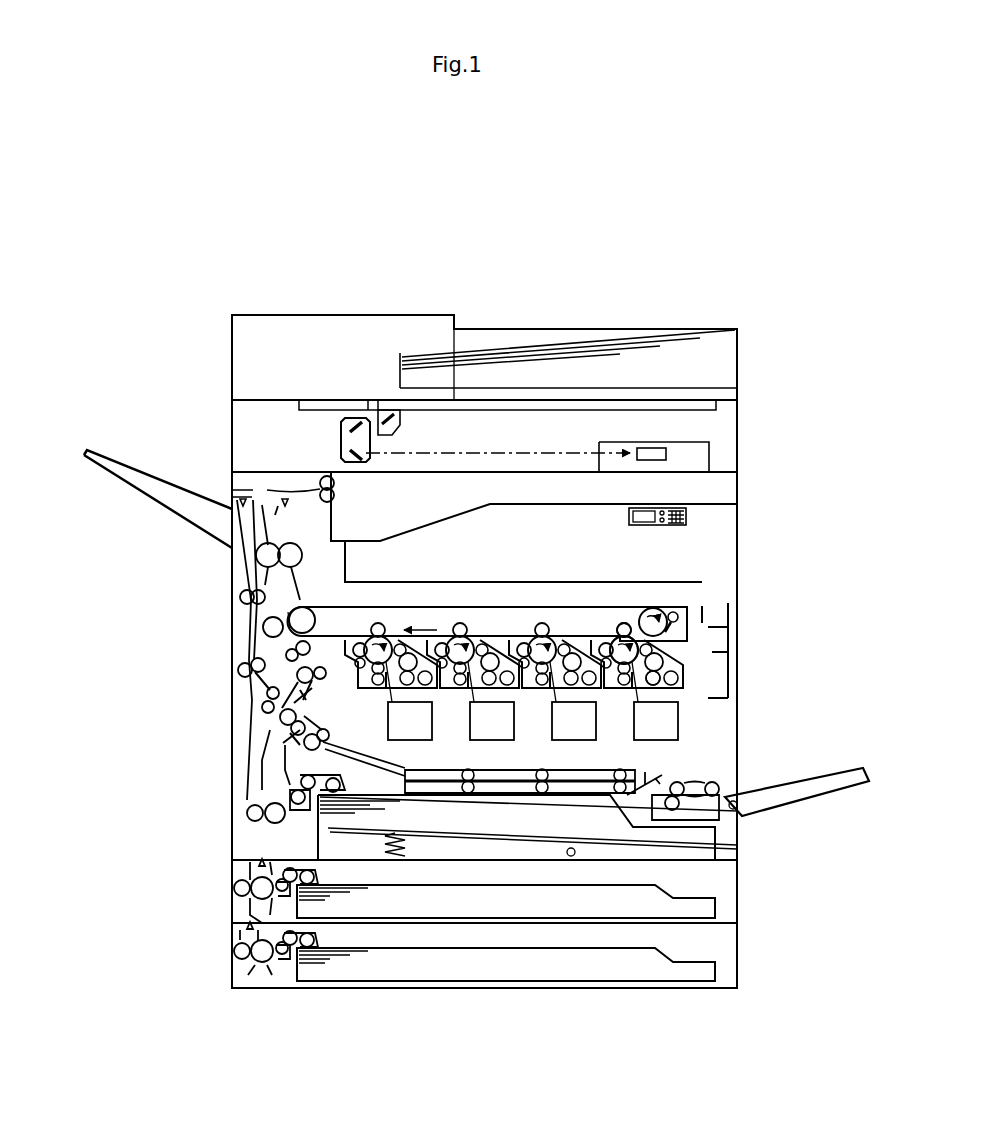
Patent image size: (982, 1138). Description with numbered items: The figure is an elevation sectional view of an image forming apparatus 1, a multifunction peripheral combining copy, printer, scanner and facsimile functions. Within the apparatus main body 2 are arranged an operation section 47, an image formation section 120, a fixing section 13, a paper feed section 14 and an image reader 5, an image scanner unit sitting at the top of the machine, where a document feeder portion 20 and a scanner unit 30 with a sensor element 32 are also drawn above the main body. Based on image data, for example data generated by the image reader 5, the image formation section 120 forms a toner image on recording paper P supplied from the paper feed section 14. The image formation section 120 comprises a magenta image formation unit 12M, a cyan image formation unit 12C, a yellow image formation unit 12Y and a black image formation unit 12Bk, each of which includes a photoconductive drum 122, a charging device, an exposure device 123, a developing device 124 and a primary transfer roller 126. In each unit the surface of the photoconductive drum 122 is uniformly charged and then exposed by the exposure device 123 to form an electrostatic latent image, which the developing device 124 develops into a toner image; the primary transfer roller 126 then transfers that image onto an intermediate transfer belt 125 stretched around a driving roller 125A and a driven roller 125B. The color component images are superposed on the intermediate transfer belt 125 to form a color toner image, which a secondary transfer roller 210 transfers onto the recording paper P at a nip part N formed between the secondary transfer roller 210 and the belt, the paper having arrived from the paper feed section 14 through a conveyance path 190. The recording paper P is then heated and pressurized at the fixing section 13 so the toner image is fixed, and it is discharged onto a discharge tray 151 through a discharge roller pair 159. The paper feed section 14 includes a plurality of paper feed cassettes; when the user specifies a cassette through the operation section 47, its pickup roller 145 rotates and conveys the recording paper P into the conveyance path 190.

The image forming apparatus 1 is at (548, 214).
The apparatus main body 2 is at (742, 528).
The image reader 5 is at (214, 286).
The automatic document feeder 20 is at (600, 320).
The scanner unit 30 is at (210, 432).
The image sensor 32 is at (615, 406).
The fixing section 13 is at (254, 556).
The discharge roller pair 159 is at (335, 480).
The discharge tray 151 is at (366, 540).
The operation section 47 is at (634, 508).
The intermediate transfer belt 125 is at (430, 605).
The driving roller 125A is at (300, 612).
The driven roller 125B is at (656, 607).
The nip part N is at (288, 598).
The black image formation unit 12Bk is at (392, 628).
The yellow image formation unit 12Y is at (473, 617).
The cyan image formation unit 12C is at (555, 628).
The magenta image formation unit 12M is at (637, 617).
The primary transfer roller 126 is at (618, 636).
The photoconductive drum 122 is at (626, 660).
The exposure device 123 is at (680, 716).
The developing device 124 is at (682, 670).
The image formation section 120 is at (740, 622).
The conveyance path 190 is at (250, 608).
The secondary transfer roller 210 is at (243, 650).
The pickup roller 145 is at (292, 930).
The recording paper P is at (560, 822).
The paper feed section 14 is at (718, 884).